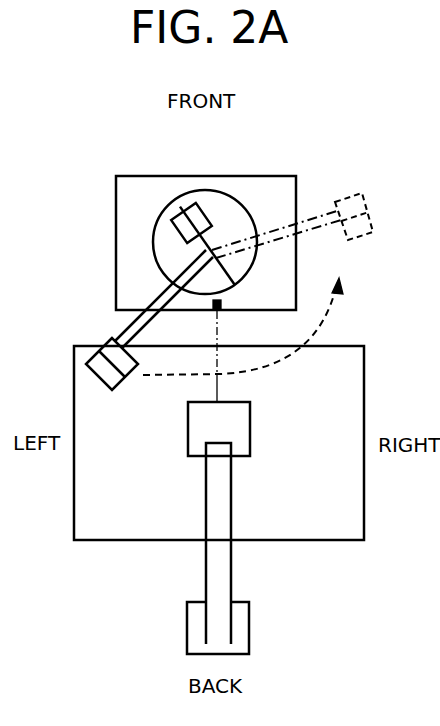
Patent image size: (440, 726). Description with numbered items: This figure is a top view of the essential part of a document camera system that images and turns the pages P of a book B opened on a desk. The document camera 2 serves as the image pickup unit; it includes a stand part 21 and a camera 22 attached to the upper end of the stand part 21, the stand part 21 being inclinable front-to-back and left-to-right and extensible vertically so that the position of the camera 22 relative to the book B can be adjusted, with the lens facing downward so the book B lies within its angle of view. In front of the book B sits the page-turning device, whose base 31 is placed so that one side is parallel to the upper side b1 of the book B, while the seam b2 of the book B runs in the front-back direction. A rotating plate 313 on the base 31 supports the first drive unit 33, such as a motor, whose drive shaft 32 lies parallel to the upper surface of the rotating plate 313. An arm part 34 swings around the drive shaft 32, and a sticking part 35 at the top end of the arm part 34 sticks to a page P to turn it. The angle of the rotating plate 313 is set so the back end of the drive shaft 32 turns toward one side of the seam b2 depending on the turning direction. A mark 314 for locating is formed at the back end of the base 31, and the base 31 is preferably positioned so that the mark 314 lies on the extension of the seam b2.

The document camera 2 is at (257, 647).
The stand part 21 is at (206, 585).
The camera 22 is at (250, 425).
The base 31 is at (276, 174).
The rotating plate 313 is at (163, 240).
The drive shaft 32 is at (182, 205).
The first drive unit 33 is at (205, 222).
The arm part 34 is at (128, 328).
The sticking part 35 is at (97, 345).
The mark 314 is at (213, 312).
The upper side of the book b1 is at (342, 346).
The seam of the book b2 is at (221, 366).
The page P is at (92, 510).
The book B is at (121, 546).